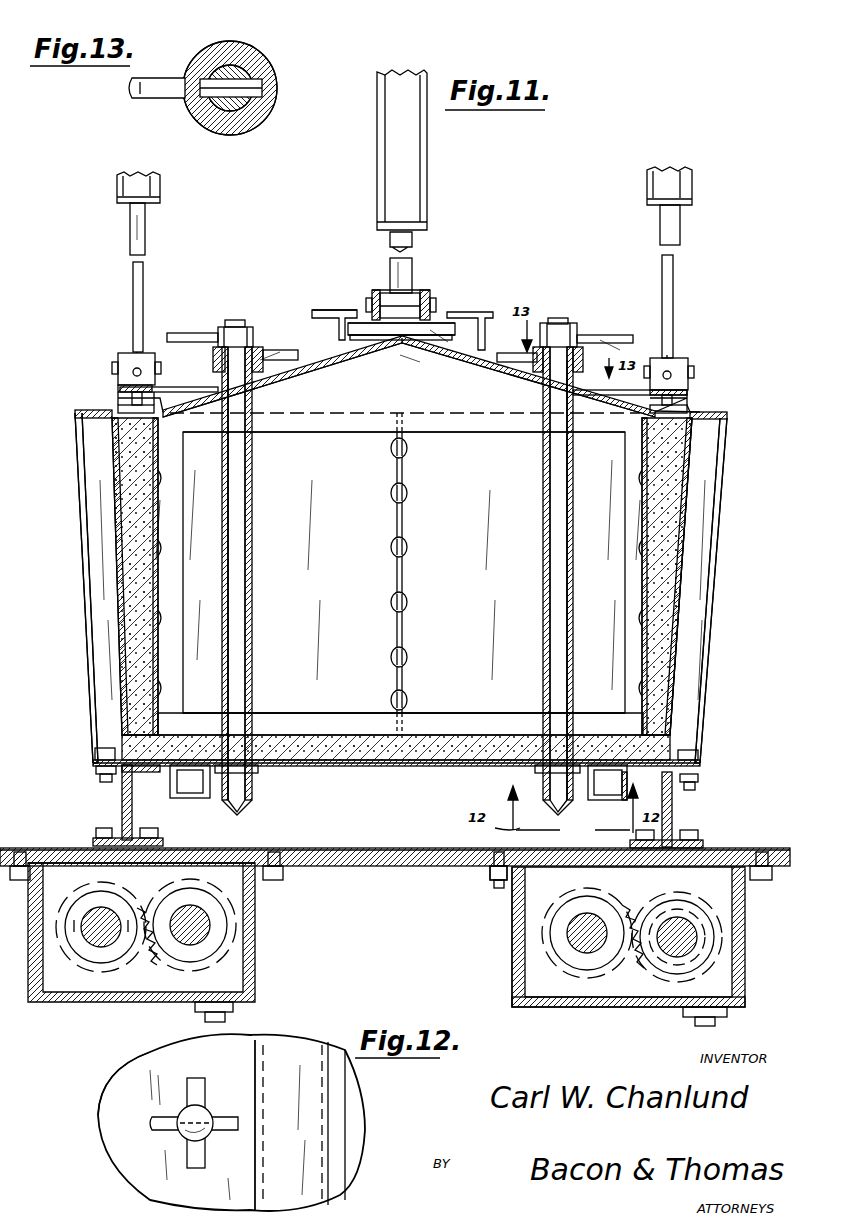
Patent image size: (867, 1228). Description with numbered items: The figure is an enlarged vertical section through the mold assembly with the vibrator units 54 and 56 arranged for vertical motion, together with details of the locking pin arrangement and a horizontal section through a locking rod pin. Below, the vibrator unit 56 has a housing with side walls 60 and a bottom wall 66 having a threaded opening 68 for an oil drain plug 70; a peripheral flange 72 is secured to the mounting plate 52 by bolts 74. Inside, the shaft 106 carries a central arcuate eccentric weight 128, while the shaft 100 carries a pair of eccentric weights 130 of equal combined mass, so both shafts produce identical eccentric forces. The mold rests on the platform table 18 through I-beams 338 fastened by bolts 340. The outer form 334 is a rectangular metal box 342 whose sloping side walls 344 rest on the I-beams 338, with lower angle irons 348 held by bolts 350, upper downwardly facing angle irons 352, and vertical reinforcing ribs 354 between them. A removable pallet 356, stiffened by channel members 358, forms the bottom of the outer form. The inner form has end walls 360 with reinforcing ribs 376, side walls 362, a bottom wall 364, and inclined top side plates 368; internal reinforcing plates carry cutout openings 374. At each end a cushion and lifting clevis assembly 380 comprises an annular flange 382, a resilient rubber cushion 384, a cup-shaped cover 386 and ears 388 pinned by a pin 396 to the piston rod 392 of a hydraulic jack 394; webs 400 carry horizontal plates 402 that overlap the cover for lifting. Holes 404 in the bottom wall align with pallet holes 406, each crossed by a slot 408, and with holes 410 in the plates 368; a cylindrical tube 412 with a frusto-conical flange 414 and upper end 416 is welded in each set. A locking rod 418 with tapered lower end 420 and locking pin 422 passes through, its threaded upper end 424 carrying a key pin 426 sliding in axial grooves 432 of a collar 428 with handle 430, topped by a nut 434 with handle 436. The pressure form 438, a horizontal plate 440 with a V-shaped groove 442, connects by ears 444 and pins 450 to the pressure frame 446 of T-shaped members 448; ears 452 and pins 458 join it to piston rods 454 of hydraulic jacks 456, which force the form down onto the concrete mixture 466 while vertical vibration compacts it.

In FIG. 11, the platform table 18 is at (350, 828).
In FIG. 11, the mounting plate 52 is at (320, 866).
In FIG. 11, the vibrator unit 54 is at (292, 930).
In FIG. 11, the vibrator unit 56 is at (478, 958).
In FIG. 11, the side walls 60 is at (745, 960).
In FIG. 11, the bottom wall 66 is at (650, 1007).
In FIG. 11, the threaded opening 68 is at (700, 1005).
In FIG. 11, the oil drain plug 70 is at (715, 1022).
In FIG. 11, the peripheral flange 72 is at (490, 866).
In FIG. 11, the bolts 74 is at (496, 890).
In FIG. 11, the shaft 100 is at (575, 952).
In FIG. 11, the shaft 106 is at (660, 960).
In FIG. 11, the eccentric weight 128 is at (676, 895).
In FIG. 11, the eccentric weights 130 is at (596, 896).
In FIG. 11, the outer form 334 is at (748, 628).
In FIG. 11, the I-beams 338 is at (122, 810).
In FIG. 12, the I-beams 338 is at (355, 1098).
In FIG. 11, the bolts 340 is at (95, 830).
In FIG. 11, the rectangular metal box 342 is at (702, 482).
In FIG. 11, the side walls 344 is at (700, 560).
In FIG. 11, the angle irons 348 is at (95, 752).
In FIG. 11, the bolts 350 is at (96, 778).
In FIG. 11, the angle irons 352 is at (78, 425).
In FIG. 11, the reinforcing ribs 354 is at (88, 560).
In FIG. 11, the pallet 356 is at (350, 768).
In FIG. 12, the pallet 356 is at (190, 1048).
In FIG. 11, the reinforcing channel members 358 is at (190, 798).
In FIG. 12, the reinforcing channel members 358 is at (300, 1050).
In FIG. 11, the end walls 360 is at (448, 445).
In FIG. 11, the side walls 362 is at (218, 558).
In FIG. 11, the bottom wall 364 is at (350, 735).
In FIG. 11, the inclined side plates 368 is at (315, 366).
In FIG. 11, the cutout openings 374 is at (440, 712).
In FIG. 11, the reinforcing ribs 376 is at (404, 582).
In FIG. 11, the cushion and lifting clevis assembly 380 is at (476, 270).
In FIG. 11, the annular flange 382 is at (445, 350).
In FIG. 11, the resilient rubber cushion 384 is at (355, 340).
In FIG. 11, the cup-shaped cover 386 is at (440, 322).
In FIG. 11, the ears 388 is at (376, 290).
In FIG. 11, the piston rod 392 is at (414, 260).
In FIG. 11, the hydraulic jack 394 is at (426, 150).
In FIG. 11, the pin 396 is at (365, 305).
In FIG. 11, the webs 400 is at (470, 358).
In FIG. 11, the horizontal plates 402 is at (340, 308).
In FIG. 11, the holes 404 is at (258, 727).
In FIG. 11, the hole 406 is at (250, 782).
In FIG. 12, the hole 406 is at (208, 1110).
In FIG. 12, the slot 408 is at (188, 1092).
In FIG. 11, the holes 410 is at (250, 390).
In FIG. 11, the cylindrical tube 412 is at (254, 560).
In FIG. 11, the frusto-conical flange 414 is at (218, 735).
In FIG. 11, the upper end 416 is at (222, 380).
In FIG. 13, the locking rod 418 is at (250, 72).
In FIG. 11, the locking rod 418 is at (256, 478).
In FIG. 11, the lower end 420 is at (244, 804).
In FIG. 11, the locking pin 422 is at (258, 770).
In FIG. 12, the locking pin 422 is at (230, 1132).
In FIG. 11, the upper end 424 is at (240, 326).
In FIG. 13, the key pin 426 is at (224, 128).
In FIG. 11, the key pin 426 is at (258, 350).
In FIG. 13, the collar 428 is at (240, 46).
In FIG. 11, the collar 428 is at (210, 350).
In FIG. 13, the handle 430 is at (146, 96).
In FIG. 11, the handle 430 is at (482, 348).
In FIG. 13, the axial grooves 432 is at (262, 92).
In FIG. 11, the nut 434 is at (226, 325).
In FIG. 11, the handle 436 is at (185, 330).
In FIG. 11, the pressure form 438 is at (722, 386).
In FIG. 11, the horizontal plate 440 is at (112, 445).
In FIG. 11, the V-shaped groove 442 is at (170, 445).
In FIG. 11, the ears 444 is at (118, 400).
In FIG. 11, the pressure frame 446 is at (80, 362).
In FIG. 11, the T-shaped members 448 is at (690, 392).
In FIG. 11, the pins 450 is at (118, 408).
In FIG. 11, the ears 452 is at (195, 352).
In FIG. 11, the piston rod 454 is at (130, 350).
In FIG. 11, the hydraulic jacks 456 is at (162, 186).
In FIG. 11, the pins 458 is at (118, 372).
In FIG. 11, the concrete mixture 466 is at (700, 514).